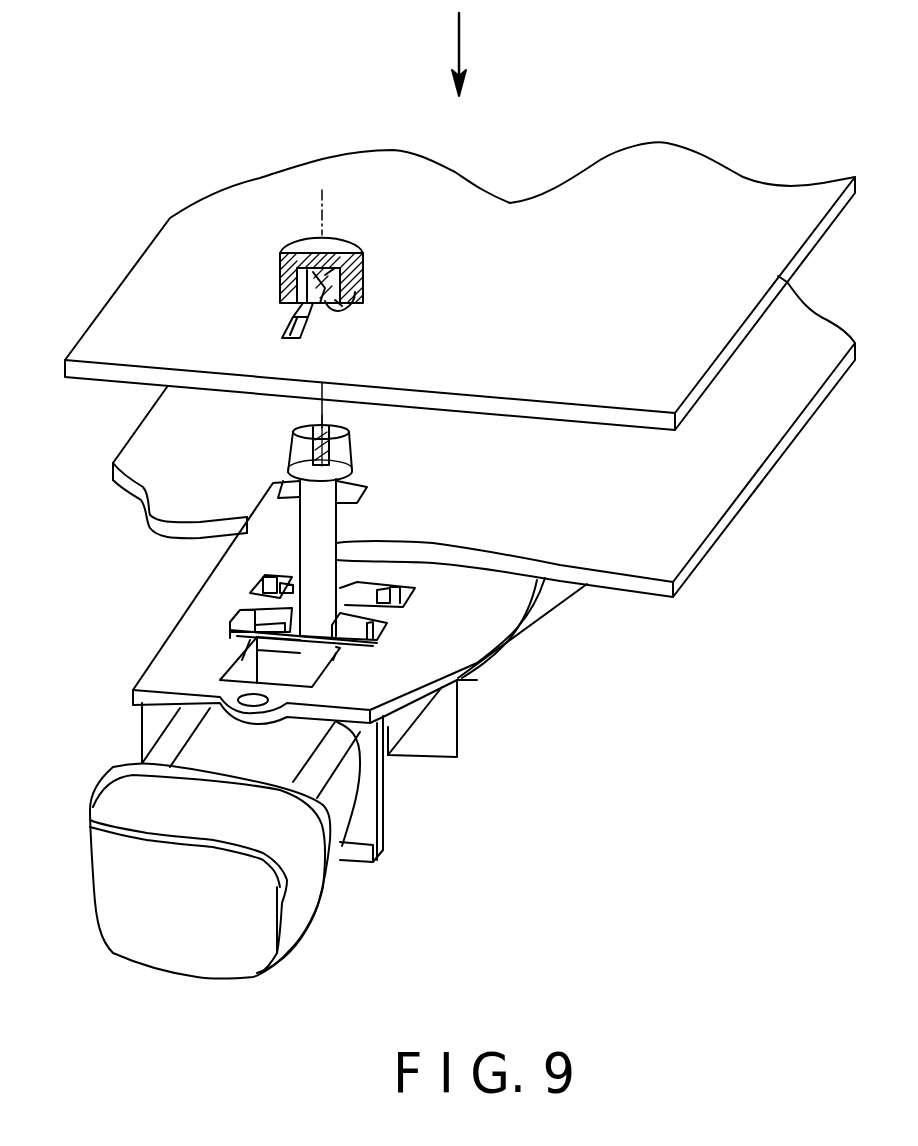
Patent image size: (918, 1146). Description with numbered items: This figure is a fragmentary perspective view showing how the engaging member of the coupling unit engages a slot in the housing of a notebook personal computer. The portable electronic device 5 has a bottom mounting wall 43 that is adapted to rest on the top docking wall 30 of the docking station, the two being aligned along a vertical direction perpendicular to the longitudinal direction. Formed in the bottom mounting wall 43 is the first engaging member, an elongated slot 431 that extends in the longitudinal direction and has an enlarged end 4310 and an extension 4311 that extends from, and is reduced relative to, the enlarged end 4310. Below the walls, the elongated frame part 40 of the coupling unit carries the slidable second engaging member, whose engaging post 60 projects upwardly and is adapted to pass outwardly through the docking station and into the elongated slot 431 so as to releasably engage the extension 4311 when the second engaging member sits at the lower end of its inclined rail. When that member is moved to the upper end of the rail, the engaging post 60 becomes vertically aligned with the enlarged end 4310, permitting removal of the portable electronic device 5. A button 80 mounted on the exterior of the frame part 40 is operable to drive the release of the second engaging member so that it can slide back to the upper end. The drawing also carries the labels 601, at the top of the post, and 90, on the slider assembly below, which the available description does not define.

The portable electronic device 5 is at (150, 230).
The top docking wall 30 is at (647, 552).
The elongated frame part 40 is at (508, 723).
The bottom mounting wall 43 is at (128, 362).
The elongated slot 431 is at (293, 280).
The enlarged end 4310 is at (327, 304).
The extension 4311 is at (307, 337).
The engaging post 60 is at (313, 547).
The head of shaft 601 is at (293, 452).
The button 80 is at (280, 913).
The slider 90 is at (170, 633).